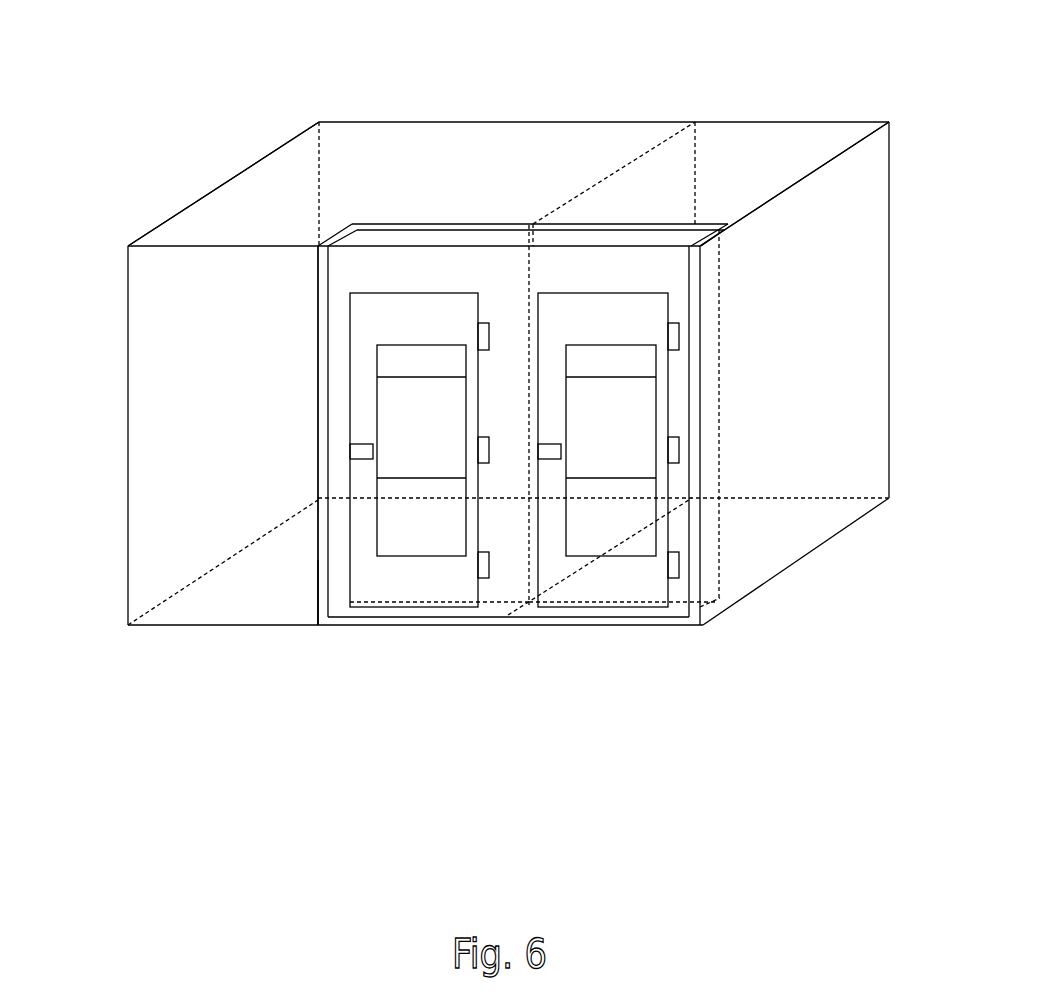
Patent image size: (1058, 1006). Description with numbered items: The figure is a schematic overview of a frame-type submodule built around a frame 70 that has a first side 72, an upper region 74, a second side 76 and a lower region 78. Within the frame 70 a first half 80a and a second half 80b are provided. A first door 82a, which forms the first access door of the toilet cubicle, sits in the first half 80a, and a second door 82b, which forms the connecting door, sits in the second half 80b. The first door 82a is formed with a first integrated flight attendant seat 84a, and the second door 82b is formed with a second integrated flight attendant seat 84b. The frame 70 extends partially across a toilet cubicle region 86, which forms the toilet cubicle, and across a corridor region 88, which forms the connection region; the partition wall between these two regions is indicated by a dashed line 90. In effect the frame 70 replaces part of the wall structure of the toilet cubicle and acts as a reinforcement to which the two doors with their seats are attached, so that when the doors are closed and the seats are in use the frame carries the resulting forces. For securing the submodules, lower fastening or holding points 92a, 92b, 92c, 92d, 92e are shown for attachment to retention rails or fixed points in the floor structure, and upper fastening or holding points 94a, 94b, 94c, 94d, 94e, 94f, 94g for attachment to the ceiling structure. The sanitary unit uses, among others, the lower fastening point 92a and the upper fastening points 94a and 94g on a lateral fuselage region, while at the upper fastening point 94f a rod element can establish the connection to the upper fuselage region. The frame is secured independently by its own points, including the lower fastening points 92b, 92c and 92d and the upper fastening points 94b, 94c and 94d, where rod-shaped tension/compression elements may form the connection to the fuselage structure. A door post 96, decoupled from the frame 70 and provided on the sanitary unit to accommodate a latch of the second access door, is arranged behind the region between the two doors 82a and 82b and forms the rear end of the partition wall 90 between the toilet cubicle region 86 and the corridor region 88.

The frame 70 is at (416, 724).
The first side 72 is at (318, 548).
The upper region 74 is at (390, 224).
The second side 76 is at (697, 437).
The lower region 78 is at (530, 625).
The first half 80a is at (390, 633).
The second half 80b is at (614, 643).
The first door 82a is at (365, 603).
The second door 82b is at (573, 602).
The first integrated flight attendant seat 84a is at (377, 405).
The second integrated flight attendant seat 84b is at (637, 412).
The toilet cubicle region 86 is at (249, 199).
The corridor region 88 is at (768, 152).
The partition wall 90 is at (632, 160).
The lower fastening point 92a is at (128, 625).
The lower fastening point 92b is at (318, 625).
The lower fastening point 92c is at (507, 625).
The lower fastening point 92d is at (706, 625).
The lower fastening point 92e is at (889, 498).
The upper fastening point 94a is at (129, 245).
The upper fastening point 94b is at (318, 245).
The upper fastening point 94c is at (533, 224).
The upper fastening point 94d is at (700, 247).
The upper fastening point 94e is at (889, 122).
The upper fastening point 94f is at (695, 122).
The upper fastening point 94g is at (319, 122).
The door post 96 is at (527, 290).